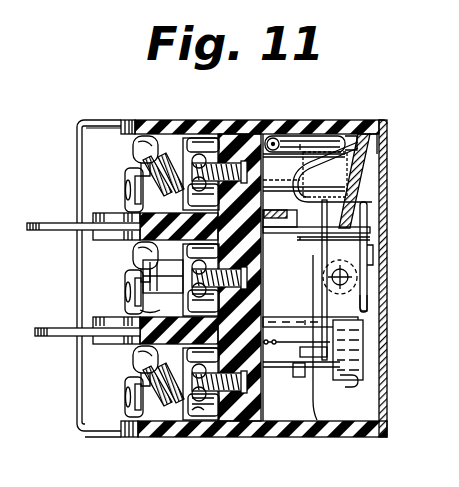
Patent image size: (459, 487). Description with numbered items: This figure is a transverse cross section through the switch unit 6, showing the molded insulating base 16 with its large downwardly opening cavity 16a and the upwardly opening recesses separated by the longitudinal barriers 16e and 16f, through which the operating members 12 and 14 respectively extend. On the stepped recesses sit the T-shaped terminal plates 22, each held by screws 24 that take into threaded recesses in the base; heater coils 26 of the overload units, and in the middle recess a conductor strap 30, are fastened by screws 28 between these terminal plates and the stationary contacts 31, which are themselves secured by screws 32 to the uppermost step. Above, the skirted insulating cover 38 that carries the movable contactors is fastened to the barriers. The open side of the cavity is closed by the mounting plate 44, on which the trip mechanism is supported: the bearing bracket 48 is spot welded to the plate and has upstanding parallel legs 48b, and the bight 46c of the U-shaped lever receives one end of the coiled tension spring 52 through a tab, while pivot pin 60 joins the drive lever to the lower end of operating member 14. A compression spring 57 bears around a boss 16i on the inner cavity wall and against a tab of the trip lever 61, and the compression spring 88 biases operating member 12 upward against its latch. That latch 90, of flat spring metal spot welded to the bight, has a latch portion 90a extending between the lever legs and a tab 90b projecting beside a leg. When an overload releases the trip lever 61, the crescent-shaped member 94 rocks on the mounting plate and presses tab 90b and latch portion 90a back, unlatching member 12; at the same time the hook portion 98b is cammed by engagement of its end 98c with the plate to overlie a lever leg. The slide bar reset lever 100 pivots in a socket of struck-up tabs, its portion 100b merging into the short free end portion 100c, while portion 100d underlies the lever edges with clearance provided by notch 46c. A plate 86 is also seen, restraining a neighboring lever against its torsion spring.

The switch unit 6 is at (385, 118).
The operating member 12 is at (48, 328).
The operating member 14 is at (40, 224).
The insulating base 16 is at (237, 124).
The cavity 16a is at (295, 425).
The barrier 16e is at (95, 341).
The barrier 16f is at (95, 217).
The boss 16i is at (272, 139).
The terminal plate 22 is at (210, 130).
The screw 24 is at (195, 428).
The heater coil 26 is at (170, 135).
The screw 28 is at (125, 185).
The conductor strap 30 is at (143, 275).
The stationary contact 31 is at (150, 126).
The screw 32 is at (134, 148).
The cover 38 is at (85, 128).
The mounting plate 44 is at (386, 215).
The bight 46c is at (372, 258).
The bearing bracket 48 is at (368, 241).
The leg 48b is at (297, 240).
The coiled tension spring 52 is at (358, 278).
The compression spring 57 is at (378, 187).
The pivot pin 60 is at (281, 240).
The trip lever 61 is at (290, 368).
The plate 86 is at (140, 311).
The compression spring 88 is at (268, 318).
The latch 90 is at (368, 297).
The latch portion 90a is at (365, 342).
The tab 90b is at (358, 384).
The crescent-shaped member 94 is at (327, 418).
The hook portion 98b is at (338, 146).
The end 98c is at (372, 172).
The slide bar reset lever 100 is at (318, 140).
The portion 100b is at (357, 132).
The free end portion 100c is at (300, 150).
The portion 100d is at (380, 150).